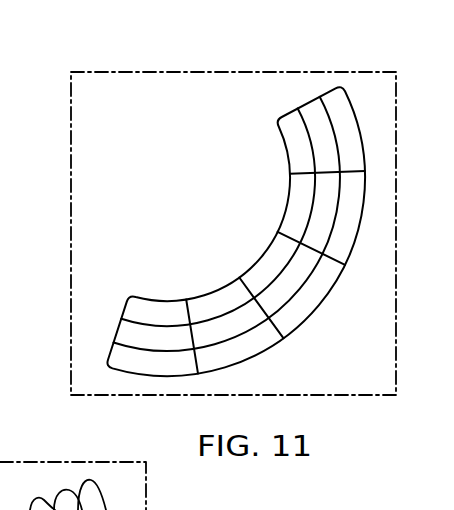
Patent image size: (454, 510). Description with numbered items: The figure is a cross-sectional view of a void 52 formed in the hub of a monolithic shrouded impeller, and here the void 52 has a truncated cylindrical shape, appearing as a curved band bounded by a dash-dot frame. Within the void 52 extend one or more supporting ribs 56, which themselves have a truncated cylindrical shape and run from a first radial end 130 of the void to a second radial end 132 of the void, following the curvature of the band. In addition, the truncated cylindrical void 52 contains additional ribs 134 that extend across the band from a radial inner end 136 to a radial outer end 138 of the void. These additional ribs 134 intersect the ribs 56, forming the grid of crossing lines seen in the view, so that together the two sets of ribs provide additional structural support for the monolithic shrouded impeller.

The first radial end 130 is at (113, 335).
The second radial end 132 is at (312, 100).
The additional ribs 134 is at (311, 244).
The radial inner end 136 is at (260, 250).
The radial outer end 138 is at (363, 218).
The ribs 56 is at (280, 270).
The void 52 is at (203, 302).